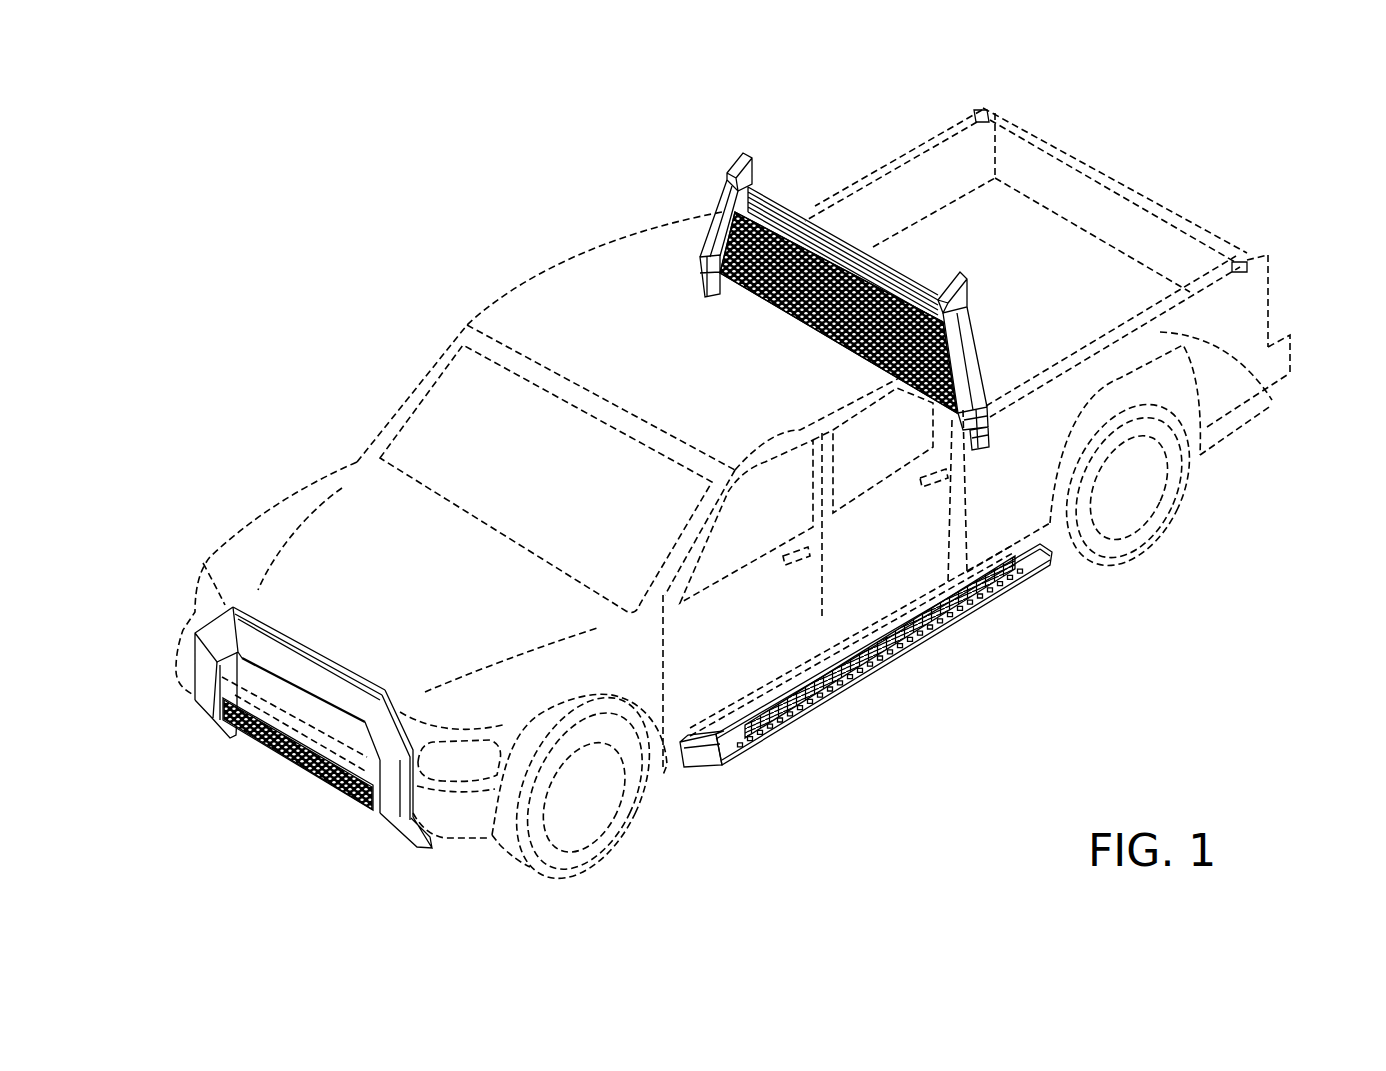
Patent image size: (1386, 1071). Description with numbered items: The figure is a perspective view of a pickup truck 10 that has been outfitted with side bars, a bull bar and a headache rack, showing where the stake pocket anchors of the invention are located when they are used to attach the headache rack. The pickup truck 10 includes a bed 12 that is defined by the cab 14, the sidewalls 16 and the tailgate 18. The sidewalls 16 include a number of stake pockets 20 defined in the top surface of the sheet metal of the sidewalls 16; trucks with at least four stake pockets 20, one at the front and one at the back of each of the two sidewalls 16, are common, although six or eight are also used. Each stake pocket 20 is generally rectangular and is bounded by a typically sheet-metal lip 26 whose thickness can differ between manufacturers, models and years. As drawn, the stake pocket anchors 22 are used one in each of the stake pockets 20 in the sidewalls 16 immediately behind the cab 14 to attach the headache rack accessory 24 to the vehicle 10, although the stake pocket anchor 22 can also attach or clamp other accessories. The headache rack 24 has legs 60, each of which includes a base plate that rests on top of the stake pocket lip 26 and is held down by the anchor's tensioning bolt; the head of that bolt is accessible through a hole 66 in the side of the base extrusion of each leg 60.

The pickup truck 10 is at (598, 270).
The bed 12 is at (1087, 267).
The cab 14 is at (640, 227).
The sidewalls 16 is at (928, 178).
The tailgate 18 is at (1057, 182).
The stake pockets 20 is at (987, 110).
The stake pocket anchors 22 is at (703, 287).
The headache rack accessory 24 is at (778, 207).
The lip 26 is at (977, 108).
The legs 60 is at (713, 207).
The hole 66 is at (988, 413).